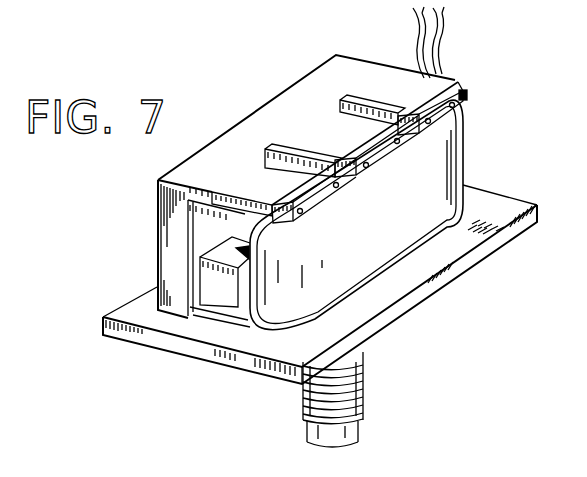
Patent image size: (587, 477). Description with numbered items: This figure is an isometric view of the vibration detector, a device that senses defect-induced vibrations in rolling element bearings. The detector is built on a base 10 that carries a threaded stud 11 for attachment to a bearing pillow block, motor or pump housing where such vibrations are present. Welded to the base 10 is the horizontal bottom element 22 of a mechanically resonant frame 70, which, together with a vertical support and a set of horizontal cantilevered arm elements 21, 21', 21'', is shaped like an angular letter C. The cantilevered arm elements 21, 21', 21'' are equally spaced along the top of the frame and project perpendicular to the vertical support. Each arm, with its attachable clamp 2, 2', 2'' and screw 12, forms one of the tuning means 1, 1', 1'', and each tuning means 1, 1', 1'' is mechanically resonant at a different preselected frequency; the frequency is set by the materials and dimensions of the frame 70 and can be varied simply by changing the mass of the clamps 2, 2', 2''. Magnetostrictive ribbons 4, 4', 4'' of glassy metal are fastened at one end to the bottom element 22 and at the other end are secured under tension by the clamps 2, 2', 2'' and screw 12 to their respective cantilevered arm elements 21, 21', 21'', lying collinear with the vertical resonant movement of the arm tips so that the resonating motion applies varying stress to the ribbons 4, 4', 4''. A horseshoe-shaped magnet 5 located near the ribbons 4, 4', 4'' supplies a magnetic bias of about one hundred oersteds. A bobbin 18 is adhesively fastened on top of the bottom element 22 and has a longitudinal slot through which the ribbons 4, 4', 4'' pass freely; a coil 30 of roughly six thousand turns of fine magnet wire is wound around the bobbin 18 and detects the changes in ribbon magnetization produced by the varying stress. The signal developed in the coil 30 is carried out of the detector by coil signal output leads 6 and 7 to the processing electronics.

The tuning means 1 is at (300, 186).
The tuning means 1' is at (228, 103).
The tuning means 1'' is at (259, 67).
The clamp 2 is at (324, 201).
The clamp 2' is at (387, 162).
The clamp 2'' is at (461, 116).
The magnetostrictive ribbon 4 is at (277, 194).
The magnetostrictive ribbon 4' is at (383, 160).
The magnetostrictive ribbon 4'' is at (405, 88).
The magnet 5 is at (227, 302).
The coil signal output lead 6 is at (411, 42).
The coil signal output lead 7 is at (440, 40).
The base 10 is at (163, 346).
The threaded stud 11 is at (358, 387).
The screw 12 is at (468, 93).
The bobbin 18 is at (466, 116).
The cantilevered arm element 21 is at (230, 256).
The cantilevered arm element 21' is at (304, 151).
The cantilevered arm element 21'' is at (372, 102).
The bottom element 22 is at (213, 319).
The coil 30 is at (446, 171).
The frame 70 is at (170, 222).